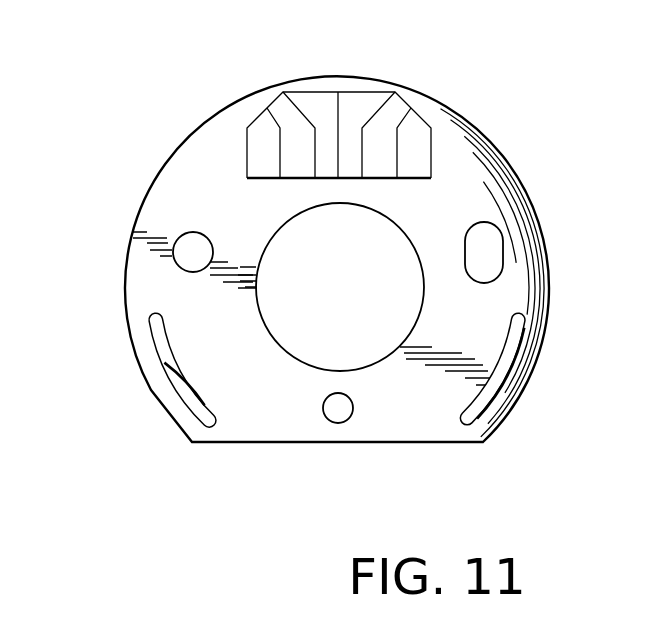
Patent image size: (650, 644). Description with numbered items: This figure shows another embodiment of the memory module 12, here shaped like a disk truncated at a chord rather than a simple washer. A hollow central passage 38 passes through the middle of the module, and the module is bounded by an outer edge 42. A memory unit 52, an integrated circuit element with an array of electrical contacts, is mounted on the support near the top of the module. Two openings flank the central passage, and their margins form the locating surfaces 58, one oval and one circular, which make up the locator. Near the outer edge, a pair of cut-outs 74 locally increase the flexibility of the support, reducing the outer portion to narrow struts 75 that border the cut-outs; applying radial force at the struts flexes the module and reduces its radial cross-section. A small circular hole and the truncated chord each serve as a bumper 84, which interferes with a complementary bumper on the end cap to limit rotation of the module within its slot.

The memory module 12 is at (216, 114).
The memory unit 52 is at (377, 92).
The hollow central passage 38 is at (362, 290).
The locating surfaces 58 is at (176, 262).
The outer edge 42 is at (136, 354).
The cut-outs 74 is at (170, 380).
The narrow struts 75 is at (517, 385).
The bumper 84 is at (337, 393).